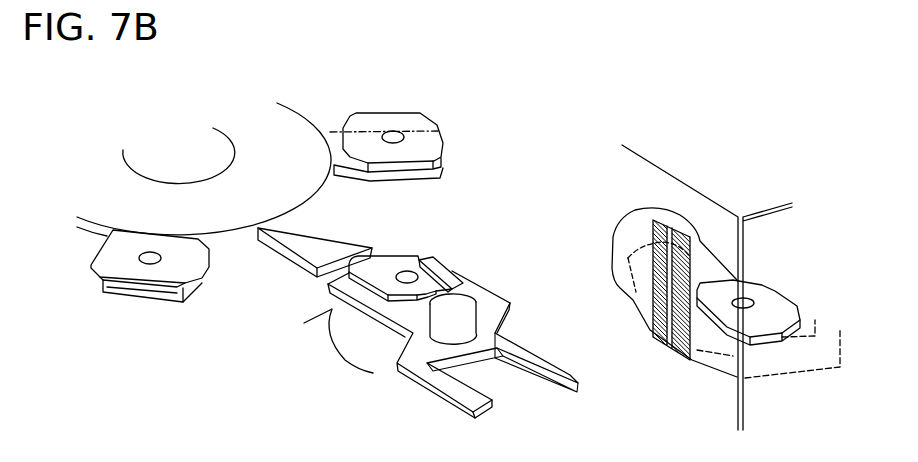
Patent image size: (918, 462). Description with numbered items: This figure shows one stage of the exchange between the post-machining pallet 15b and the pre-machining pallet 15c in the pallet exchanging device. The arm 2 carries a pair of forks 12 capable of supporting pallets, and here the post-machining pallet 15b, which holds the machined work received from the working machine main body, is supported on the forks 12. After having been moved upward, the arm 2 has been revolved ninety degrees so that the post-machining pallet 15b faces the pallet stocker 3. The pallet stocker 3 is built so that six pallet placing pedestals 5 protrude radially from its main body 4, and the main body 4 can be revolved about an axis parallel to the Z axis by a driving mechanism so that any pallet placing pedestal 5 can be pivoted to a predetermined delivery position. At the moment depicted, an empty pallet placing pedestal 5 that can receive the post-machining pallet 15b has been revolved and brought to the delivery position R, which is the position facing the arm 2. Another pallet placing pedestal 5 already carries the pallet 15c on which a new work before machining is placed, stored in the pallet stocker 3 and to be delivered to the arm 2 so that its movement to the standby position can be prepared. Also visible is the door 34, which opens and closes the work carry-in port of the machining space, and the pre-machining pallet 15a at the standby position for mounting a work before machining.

The arm 2 is at (490, 313).
The pallet stocker 3 is at (414, 73).
The main body 4 is at (278, 104).
The pallet placing pedestal 5 is at (128, 295).
The fork 12 is at (460, 292).
The pre-machining pallet 15a is at (787, 352).
The post-machining pallet 15b is at (388, 263).
The pallet 15c is at (420, 120).
The door 34 is at (672, 184).
The delivery position R is at (338, 286).